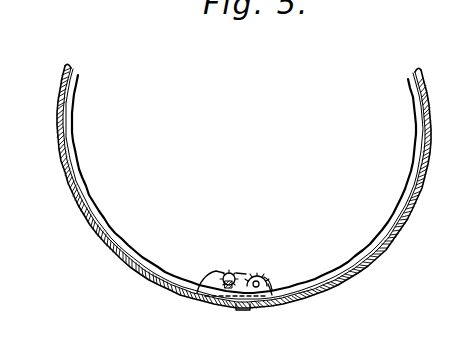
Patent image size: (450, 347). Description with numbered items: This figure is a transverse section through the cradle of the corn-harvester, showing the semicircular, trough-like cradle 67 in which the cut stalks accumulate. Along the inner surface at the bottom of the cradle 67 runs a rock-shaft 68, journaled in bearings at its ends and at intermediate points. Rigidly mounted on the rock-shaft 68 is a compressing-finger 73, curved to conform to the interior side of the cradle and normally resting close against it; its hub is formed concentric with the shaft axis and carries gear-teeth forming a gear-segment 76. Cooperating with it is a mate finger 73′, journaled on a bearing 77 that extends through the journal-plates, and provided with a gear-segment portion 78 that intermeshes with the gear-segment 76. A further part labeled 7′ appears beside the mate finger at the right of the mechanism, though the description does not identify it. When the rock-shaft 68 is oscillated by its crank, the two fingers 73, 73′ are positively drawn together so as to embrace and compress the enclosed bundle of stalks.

The cradle 67 is at (134, 262).
The compressing-finger 73 is at (109, 227).
The mate finger 73′ is at (386, 226).
The rock-shaft 68 is at (222, 277).
The gear-segment 76 is at (233, 270).
The gear-segment portion 78 is at (250, 271).
The bearing 77 is at (259, 279).
The bracket 7′ is at (273, 278).